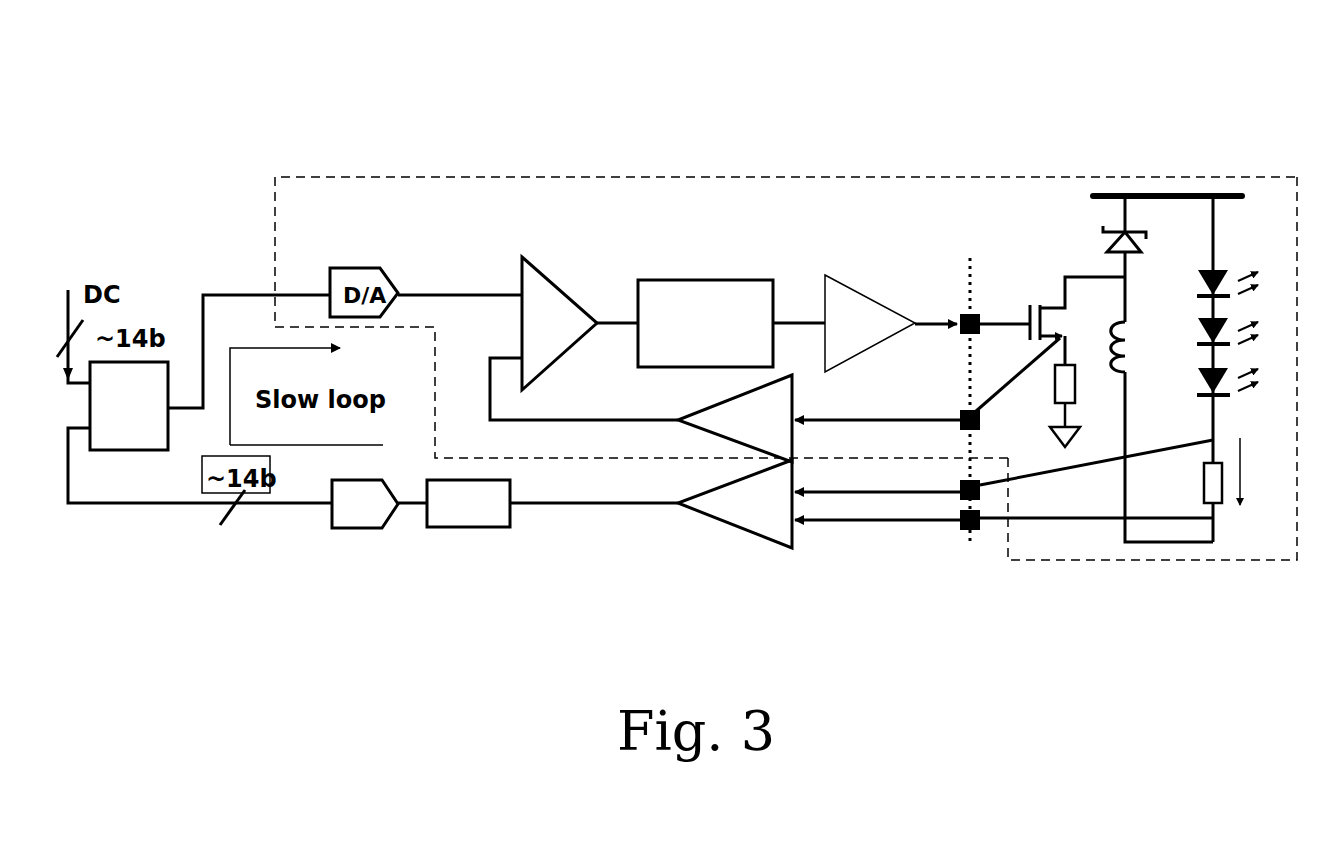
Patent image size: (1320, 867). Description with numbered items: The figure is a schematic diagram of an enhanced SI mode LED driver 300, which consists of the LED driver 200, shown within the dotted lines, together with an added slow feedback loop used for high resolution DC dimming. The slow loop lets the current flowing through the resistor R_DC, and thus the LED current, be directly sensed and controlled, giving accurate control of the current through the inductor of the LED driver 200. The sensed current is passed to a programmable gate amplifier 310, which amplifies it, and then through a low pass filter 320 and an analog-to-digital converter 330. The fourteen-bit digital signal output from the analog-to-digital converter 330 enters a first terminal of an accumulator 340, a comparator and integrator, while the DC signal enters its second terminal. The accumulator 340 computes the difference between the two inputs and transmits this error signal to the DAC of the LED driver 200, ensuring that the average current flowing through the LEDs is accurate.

The LED driver 200 is at (766, 177).
The enhanced SI mode LED driver 300 is at (1022, 118).
The programmable gate amplifier 310 is at (755, 535).
The low pass filter 320 is at (458, 528).
The analog-to-digital converter 330 is at (353, 528).
The accumulator 340 is at (160, 362).